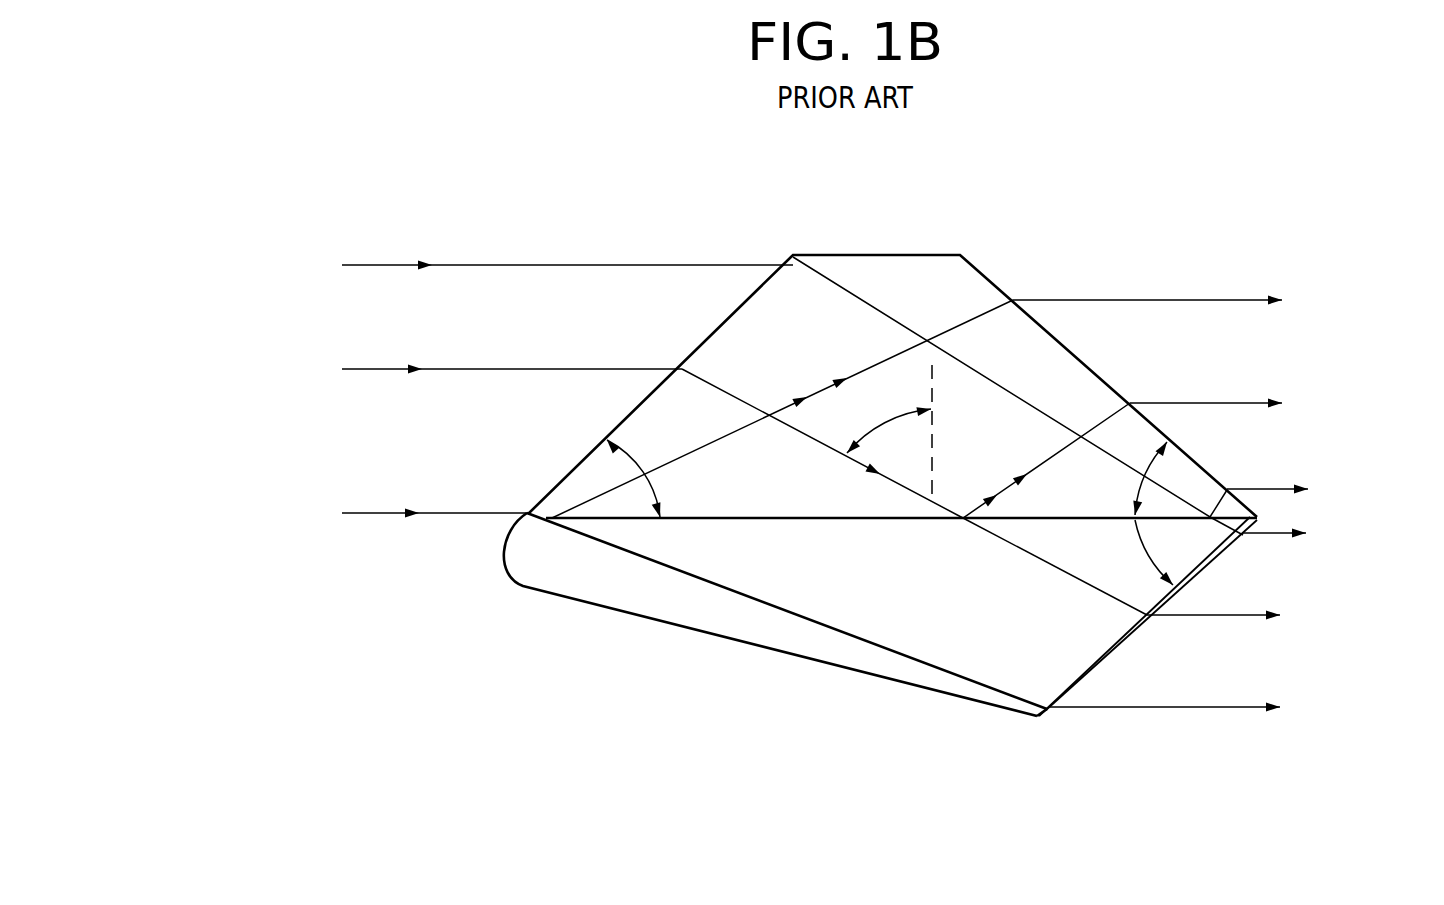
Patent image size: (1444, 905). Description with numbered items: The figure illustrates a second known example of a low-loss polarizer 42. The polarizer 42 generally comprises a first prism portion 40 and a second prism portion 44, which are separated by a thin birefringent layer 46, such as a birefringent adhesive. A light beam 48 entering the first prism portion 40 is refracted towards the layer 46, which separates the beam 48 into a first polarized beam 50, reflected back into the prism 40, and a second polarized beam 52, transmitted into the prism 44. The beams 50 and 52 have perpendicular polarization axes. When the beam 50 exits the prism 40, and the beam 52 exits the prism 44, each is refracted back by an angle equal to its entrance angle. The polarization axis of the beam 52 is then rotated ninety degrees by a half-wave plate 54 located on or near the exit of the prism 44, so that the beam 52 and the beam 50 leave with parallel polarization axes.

The first prism portion 40 is at (908, 254).
The polarizer 42 is at (355, 620).
The second prism portion 44 is at (923, 690).
The thin birefringent layer 46 is at (710, 520).
The light beam 48 is at (380, 264).
The first polarized beam 50 is at (1230, 299).
The second polarized beam 52 is at (1272, 532).
The half-wave plate 54 is at (1039, 718).